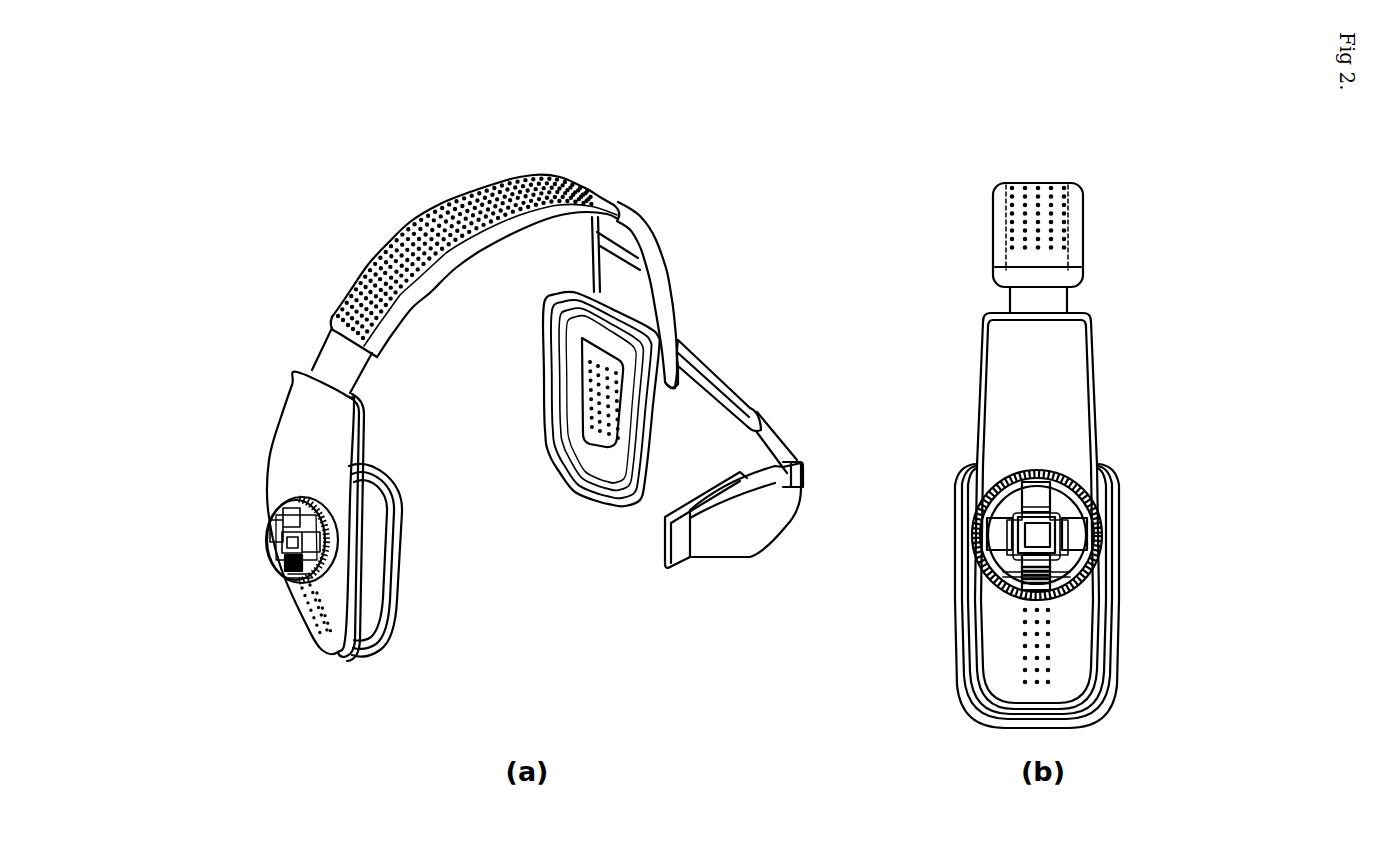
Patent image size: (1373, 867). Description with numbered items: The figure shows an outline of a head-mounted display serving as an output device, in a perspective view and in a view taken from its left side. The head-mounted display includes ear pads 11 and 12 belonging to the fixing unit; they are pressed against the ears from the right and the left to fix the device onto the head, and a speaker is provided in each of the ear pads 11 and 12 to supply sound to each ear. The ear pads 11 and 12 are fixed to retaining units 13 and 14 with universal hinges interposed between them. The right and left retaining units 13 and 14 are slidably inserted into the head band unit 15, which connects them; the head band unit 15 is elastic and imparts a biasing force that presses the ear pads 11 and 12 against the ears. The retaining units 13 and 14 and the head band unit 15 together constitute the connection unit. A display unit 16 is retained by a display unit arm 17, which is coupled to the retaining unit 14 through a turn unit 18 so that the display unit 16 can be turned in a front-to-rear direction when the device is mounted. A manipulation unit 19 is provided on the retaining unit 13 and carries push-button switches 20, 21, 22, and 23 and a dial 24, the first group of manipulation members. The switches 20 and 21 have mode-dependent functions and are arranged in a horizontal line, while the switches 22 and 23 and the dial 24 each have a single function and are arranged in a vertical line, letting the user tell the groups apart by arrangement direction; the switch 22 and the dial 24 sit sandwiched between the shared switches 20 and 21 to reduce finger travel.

The ear pad 11 is at (397, 613).
The ear pad 12 is at (600, 498).
The retaining unit 13 is at (287, 412).
The retaining unit 14 is at (667, 258).
The head band unit 15 is at (413, 221).
The display unit 16 is at (717, 557).
The display unit arm 17 is at (723, 370).
The turn unit 18 is at (680, 332).
The manipulation unit 19 is at (280, 493).
The push-button switch 20 is at (997, 543).
The push-button switch 21 is at (1077, 533).
The push-button switch 22 is at (1037, 530).
The push-button switch 23 is at (1040, 490).
The dial 24 is at (1043, 583).